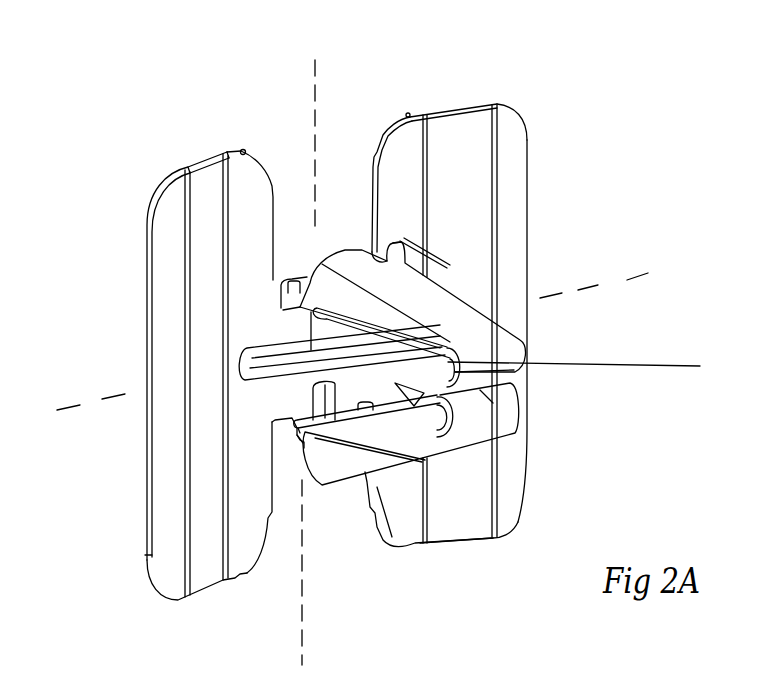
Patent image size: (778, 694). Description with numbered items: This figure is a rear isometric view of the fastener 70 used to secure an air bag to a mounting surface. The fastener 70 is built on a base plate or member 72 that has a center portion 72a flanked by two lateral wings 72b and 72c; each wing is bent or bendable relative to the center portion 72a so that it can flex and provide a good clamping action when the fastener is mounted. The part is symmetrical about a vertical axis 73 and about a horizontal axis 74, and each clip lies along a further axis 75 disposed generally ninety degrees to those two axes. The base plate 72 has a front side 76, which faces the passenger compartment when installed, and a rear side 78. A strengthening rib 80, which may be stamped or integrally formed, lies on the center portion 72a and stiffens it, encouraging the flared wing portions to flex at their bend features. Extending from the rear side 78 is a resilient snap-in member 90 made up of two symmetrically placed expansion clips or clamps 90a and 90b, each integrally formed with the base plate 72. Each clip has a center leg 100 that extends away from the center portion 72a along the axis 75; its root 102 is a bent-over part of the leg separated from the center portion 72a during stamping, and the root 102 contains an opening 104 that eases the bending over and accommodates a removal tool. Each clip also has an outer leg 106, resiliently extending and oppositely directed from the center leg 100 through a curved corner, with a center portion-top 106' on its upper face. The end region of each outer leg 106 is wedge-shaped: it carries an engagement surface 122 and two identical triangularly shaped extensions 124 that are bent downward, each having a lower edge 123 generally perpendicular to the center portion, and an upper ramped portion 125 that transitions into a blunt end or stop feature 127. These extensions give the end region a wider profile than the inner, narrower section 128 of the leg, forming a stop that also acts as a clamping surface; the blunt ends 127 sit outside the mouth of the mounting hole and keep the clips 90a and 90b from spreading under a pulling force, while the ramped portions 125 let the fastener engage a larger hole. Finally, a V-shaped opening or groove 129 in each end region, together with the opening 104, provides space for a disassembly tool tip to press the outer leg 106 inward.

The fastener 70 is at (464, 104).
The base plate 72 is at (153, 190).
The center portion 72a is at (273, 278).
The lateral wing 72b is at (203, 180).
The lateral wing 72c is at (483, 124).
The vertical axis 73 is at (303, 603).
The horizontal axis 74 is at (577, 290).
The clip axis 75 is at (555, 445).
The front side 76 is at (393, 123).
The rear side 78 is at (510, 143).
The strengthening rib 80 is at (258, 347).
The resilient snap-in member 90 is at (509, 359).
The clip 90a is at (523, 334).
The clip 90b is at (513, 404).
The center leg 100 is at (312, 386).
The root 102 is at (300, 298).
The opening 104 is at (545, 693).
The outer leg 106 is at (478, 402).
The center portion-top of outer leg 106' is at (517, 235).
The engagement surface 122 is at (407, 275).
The lower edge 123 is at (400, 643).
The triangularly shaped extension 124 is at (314, 270).
The ramped portion 125 is at (310, 270).
The blunt end 127 is at (306, 272).
The narrower section 128 is at (370, 258).
The V-shaped opening 129 is at (395, 243).